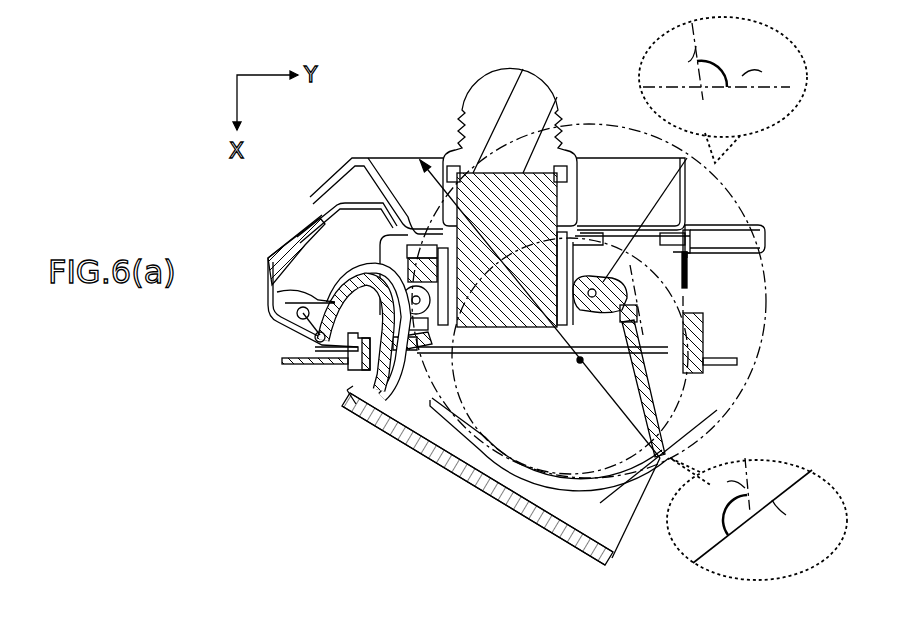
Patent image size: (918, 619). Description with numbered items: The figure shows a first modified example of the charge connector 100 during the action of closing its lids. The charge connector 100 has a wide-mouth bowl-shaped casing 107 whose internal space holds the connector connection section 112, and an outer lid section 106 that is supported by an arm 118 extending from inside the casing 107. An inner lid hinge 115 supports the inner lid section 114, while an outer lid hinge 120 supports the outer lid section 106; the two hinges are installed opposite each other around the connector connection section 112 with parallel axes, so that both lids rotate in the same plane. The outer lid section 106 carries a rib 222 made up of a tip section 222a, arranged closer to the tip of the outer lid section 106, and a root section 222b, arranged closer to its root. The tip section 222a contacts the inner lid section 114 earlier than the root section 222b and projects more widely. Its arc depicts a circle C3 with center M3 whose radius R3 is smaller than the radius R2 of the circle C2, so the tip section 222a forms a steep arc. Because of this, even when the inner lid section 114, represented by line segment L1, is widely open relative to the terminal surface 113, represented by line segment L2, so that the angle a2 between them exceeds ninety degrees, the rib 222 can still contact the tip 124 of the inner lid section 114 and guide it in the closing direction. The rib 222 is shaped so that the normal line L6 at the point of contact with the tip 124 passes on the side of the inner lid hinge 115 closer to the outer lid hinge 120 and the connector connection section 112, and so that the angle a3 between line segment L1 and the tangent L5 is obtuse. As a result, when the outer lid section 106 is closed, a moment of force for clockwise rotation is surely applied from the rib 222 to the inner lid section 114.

The charge connector 100 is at (378, 149).
The outer lid section 106 is at (397, 433).
The casing 107 is at (692, 256).
The connector connection section 112 is at (510, 246).
The terminal surface 113 is at (530, 359).
The inner lid section 114 is at (702, 312).
The inner lid hinge 115 is at (497, 300).
The arm 118 is at (370, 407).
The outer lid hinge 120 is at (268, 322).
The tip 124 is at (645, 438).
The rib 222 is at (468, 555).
The tip section 222a is at (585, 522).
The root section 222b is at (437, 433).
The line segment L1 is at (681, 286).
The line segment L2 is at (683, 287).
The tangent L5 is at (712, 412).
The normal line L6 is at (447, 158).
The radius R2 is at (632, 220).
The radius R3 is at (502, 282).
The circle C2 is at (740, 203).
The circle C3 is at (703, 380).
The center M3 is at (580, 365).
The angle a2 is at (712, 68).
The angle a3 is at (730, 520).